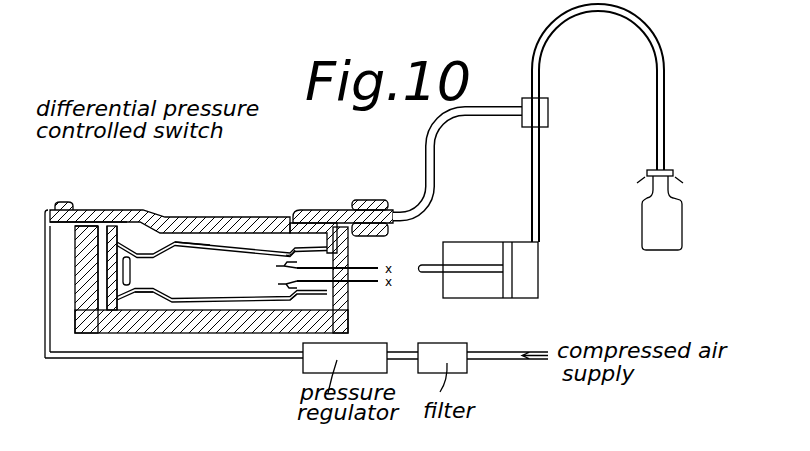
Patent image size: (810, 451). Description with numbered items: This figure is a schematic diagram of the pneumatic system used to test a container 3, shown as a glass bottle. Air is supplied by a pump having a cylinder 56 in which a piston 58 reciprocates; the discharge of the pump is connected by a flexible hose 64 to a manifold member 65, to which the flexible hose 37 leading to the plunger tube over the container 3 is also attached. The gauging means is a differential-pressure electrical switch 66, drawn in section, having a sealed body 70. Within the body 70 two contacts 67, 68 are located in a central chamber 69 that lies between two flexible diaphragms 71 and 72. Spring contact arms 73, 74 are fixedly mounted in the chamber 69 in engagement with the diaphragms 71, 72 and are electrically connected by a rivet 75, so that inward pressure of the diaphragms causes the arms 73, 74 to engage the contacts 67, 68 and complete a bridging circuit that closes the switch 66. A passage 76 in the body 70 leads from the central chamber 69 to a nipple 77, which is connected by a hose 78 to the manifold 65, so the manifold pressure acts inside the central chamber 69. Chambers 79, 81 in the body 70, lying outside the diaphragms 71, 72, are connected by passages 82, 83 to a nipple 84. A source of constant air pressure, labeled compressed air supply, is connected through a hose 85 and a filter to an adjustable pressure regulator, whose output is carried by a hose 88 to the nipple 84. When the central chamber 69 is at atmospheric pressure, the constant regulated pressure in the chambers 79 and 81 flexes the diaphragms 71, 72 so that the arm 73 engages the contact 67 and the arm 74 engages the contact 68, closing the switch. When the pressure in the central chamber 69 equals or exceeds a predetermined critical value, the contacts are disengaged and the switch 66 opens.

The container 3 is at (668, 220).
The flexible hose 37 is at (666, 97).
The cylinder 56 is at (540, 272).
The piston 58 is at (512, 242).
The flexible hose 64 is at (541, 172).
The manifold member 65 is at (549, 108).
The differential-pressure electrical switch 66 is at (235, 210).
The contact 67 is at (276, 266).
The contact 68 is at (278, 283).
The central chamber 69 is at (210, 282).
The body 70 is at (262, 320).
The flexible diaphragm 71 is at (290, 250).
The flexible diaphragm 72 is at (300, 297).
The spring contact arm 73 is at (210, 256).
The spring contact arm 74 is at (210, 300).
The rivet 75 is at (121, 286).
The passage 76 is at (305, 222).
The nipple 77 is at (364, 214).
The hose 78 is at (436, 172).
The chamber 79 is at (182, 241).
The chamber 81 is at (153, 302).
The passage 82 is at (132, 222).
The passage 83 is at (97, 262).
The nipple 84 is at (80, 195).
The hose 85 is at (498, 364).
The hose 88 is at (46, 292).